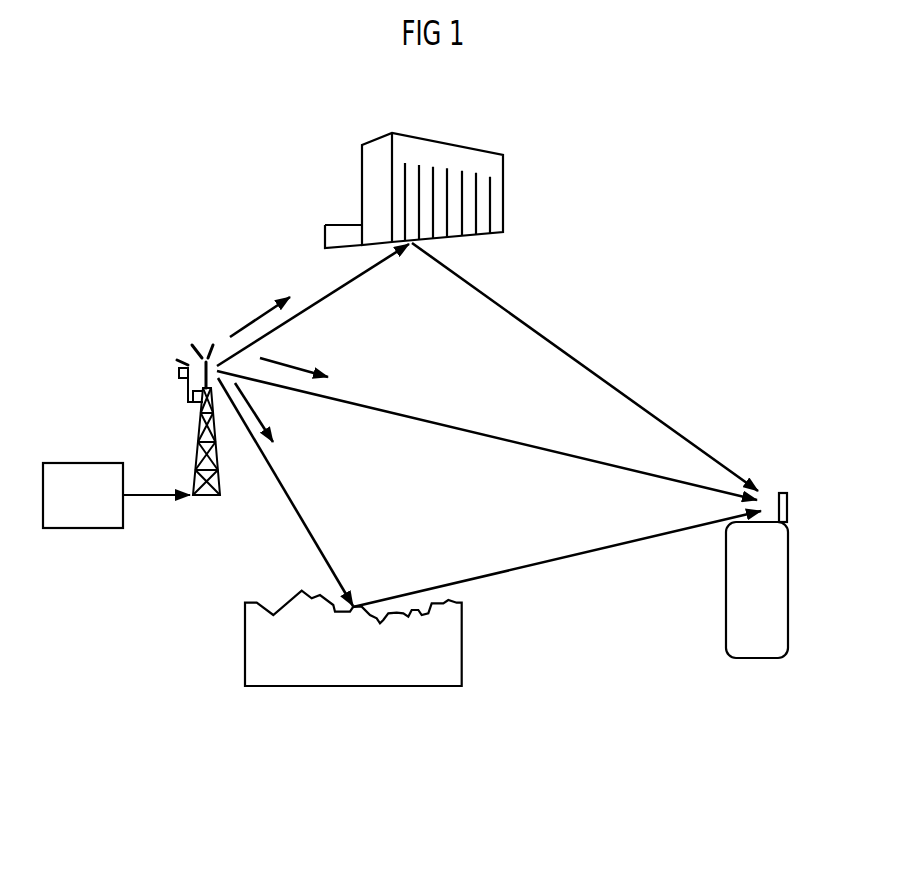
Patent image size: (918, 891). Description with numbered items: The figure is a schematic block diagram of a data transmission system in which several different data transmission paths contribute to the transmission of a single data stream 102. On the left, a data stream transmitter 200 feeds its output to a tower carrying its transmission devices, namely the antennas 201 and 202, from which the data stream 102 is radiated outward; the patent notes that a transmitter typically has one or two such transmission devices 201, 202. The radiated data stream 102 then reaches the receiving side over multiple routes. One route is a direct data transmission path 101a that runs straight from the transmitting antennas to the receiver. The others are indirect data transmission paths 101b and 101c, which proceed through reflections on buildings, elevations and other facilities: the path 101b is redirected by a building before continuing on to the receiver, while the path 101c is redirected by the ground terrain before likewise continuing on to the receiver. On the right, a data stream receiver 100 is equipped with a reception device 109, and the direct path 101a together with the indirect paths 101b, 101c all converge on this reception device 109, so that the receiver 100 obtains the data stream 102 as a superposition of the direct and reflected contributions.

The data stream receiver 100 is at (755, 660).
The reception device 109 is at (787, 507).
The direct data transmission path 101a is at (428, 418).
The indirect data transmission path 101b is at (563, 348).
The indirect data transmission path 101c is at (310, 528).
The data stream 102 is at (248, 320).
The data stream transmitter 200 is at (92, 530).
The transmission device 201 is at (187, 380).
The transmission device 202 is at (193, 365).